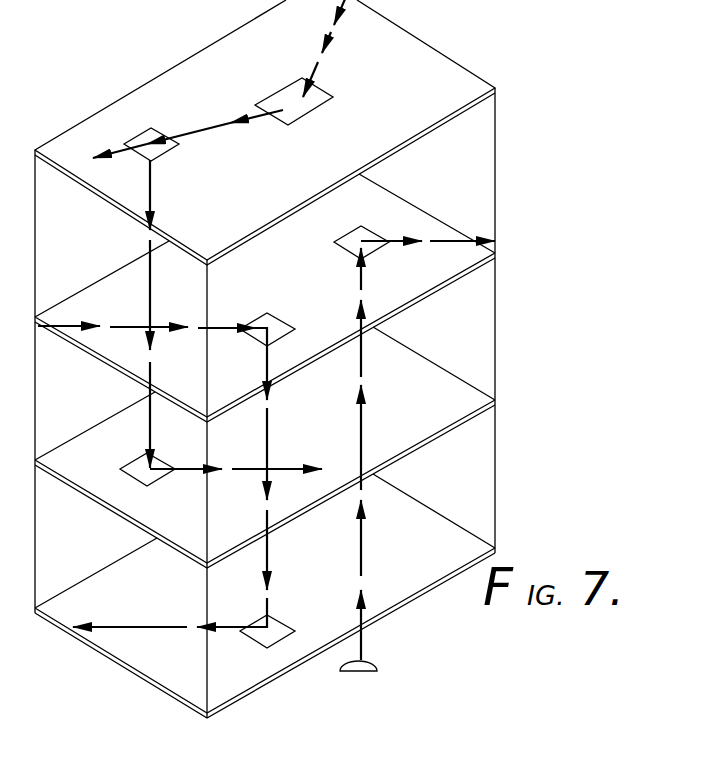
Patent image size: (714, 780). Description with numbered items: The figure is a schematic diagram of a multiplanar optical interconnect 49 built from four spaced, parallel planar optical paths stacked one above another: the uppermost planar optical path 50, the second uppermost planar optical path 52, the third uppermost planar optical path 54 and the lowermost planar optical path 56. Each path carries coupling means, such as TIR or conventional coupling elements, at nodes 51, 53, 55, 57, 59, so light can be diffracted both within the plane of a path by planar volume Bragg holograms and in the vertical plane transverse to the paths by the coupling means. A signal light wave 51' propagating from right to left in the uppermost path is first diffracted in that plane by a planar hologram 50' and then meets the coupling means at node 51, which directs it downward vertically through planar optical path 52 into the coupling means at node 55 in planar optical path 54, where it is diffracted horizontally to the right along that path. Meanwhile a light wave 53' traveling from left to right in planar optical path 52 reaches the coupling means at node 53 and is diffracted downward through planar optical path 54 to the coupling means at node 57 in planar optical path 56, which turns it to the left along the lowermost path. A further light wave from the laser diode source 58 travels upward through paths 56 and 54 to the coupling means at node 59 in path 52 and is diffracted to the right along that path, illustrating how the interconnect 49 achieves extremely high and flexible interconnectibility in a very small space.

The multiplanar optical interconnect 49 is at (508, 72).
The uppermost planar optical path 50 is at (267, 132).
The planar hologram 50' is at (330, 92).
The node 51 is at (188, 125).
The signal light wave 51' is at (293, 57).
The second uppermost planar optical path 52 is at (430, 233).
The node 53 is at (267, 303).
The light wave 53' is at (147, 362).
The third uppermost planar optical path 54 is at (452, 397).
The node 55 is at (135, 470).
The lowermost planar optical path 56 is at (450, 553).
The node 57 is at (276, 629).
The laser diode source 58 is at (370, 664).
The node 59 is at (368, 233).